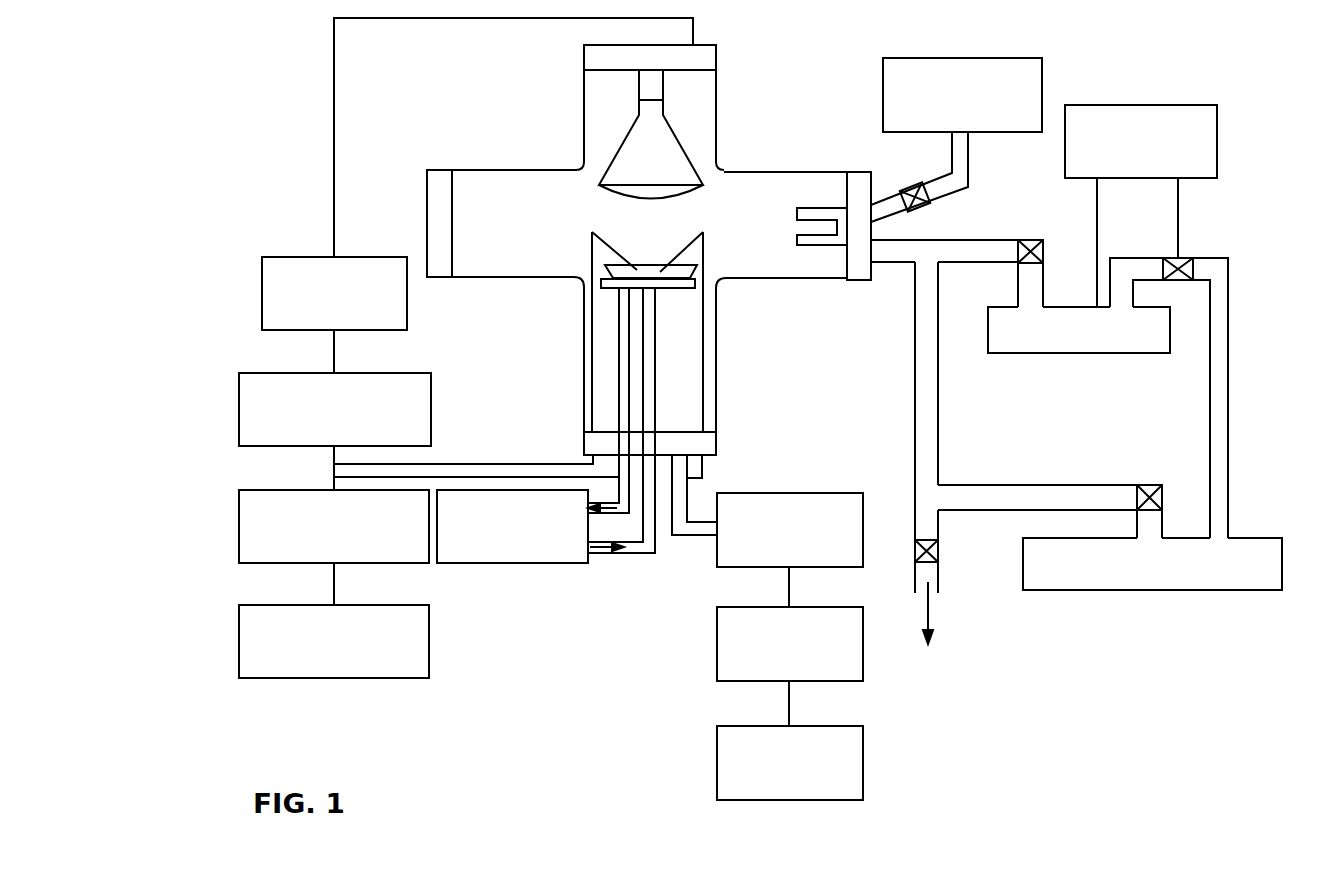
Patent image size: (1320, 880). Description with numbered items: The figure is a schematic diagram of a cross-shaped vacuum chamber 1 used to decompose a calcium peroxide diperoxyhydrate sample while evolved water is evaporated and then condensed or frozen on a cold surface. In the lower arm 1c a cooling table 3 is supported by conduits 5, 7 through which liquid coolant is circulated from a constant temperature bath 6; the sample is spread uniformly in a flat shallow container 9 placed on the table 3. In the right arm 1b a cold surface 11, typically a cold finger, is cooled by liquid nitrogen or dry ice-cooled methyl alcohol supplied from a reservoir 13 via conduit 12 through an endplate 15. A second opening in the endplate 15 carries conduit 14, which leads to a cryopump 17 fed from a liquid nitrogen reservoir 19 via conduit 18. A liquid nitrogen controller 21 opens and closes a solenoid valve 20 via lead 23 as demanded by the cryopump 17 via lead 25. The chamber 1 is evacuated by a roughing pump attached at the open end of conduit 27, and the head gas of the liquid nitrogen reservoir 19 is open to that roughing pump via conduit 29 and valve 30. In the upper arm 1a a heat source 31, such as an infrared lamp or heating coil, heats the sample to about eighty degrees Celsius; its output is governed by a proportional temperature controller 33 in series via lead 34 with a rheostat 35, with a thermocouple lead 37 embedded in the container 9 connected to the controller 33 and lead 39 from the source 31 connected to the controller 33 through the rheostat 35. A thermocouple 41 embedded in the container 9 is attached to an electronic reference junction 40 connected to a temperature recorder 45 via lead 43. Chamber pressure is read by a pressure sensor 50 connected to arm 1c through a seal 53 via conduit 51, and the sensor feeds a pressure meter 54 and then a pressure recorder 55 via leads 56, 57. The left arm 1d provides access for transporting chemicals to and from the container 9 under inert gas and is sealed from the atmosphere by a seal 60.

The vacuum chamber 1 is at (649, 238).
The arm 1a is at (584, 108).
The arm 1b is at (808, 172).
The arm 1c is at (716, 372).
The arm 1d is at (506, 170).
The cooling table 3 is at (677, 290).
The conduit 5 is at (619, 370).
The constant temperature bath 6 is at (498, 566).
The conduit 7 is at (640, 556).
The flat shallow container 9 is at (638, 262).
The cold surface 11 is at (797, 226).
The conduit 12 is at (960, 190).
The reservoir 13 is at (1042, 84).
The conduit 14 is at (985, 264).
The endplate 15 is at (857, 282).
The pump 17 is at (1050, 354).
The conduit 18 is at (1229, 434).
The liquid nitrogen reservoir 19 is at (1143, 594).
The solenoid valve 20 is at (1193, 260).
The liquid nitrogen controller 21 is at (1152, 105).
The lead 23 is at (1178, 240).
The lead 25 is at (1097, 236).
The conduit 27 is at (915, 408).
The conduit 29 is at (1010, 485).
The valve 30 is at (1150, 486).
The heat source 31 is at (684, 145).
The proportional temperature controller 33 is at (239, 402).
The lead 34 is at (334, 352).
The rheostat 35 is at (262, 292).
The thermocouple lead 37 is at (490, 464).
The lead 39 is at (334, 138).
The electronic reference junction 40 is at (239, 520).
The thermocouple 41 is at (674, 262).
The lead 43 is at (334, 586).
The temperature recorder 45 is at (239, 638).
The pressure sensor 50 is at (800, 493).
The conduit 51 is at (697, 540).
The seal 53 is at (716, 452).
The pressure meter 54 is at (717, 648).
The pressure recorder 55 is at (717, 766).
The lead 56 is at (789, 588).
The lead 57 is at (789, 702).
The seal 60 is at (432, 280).